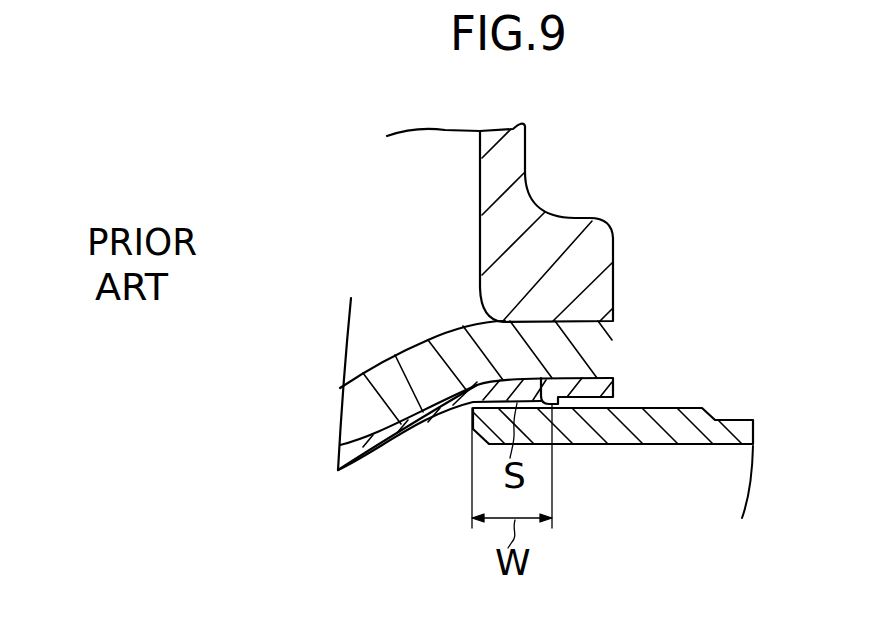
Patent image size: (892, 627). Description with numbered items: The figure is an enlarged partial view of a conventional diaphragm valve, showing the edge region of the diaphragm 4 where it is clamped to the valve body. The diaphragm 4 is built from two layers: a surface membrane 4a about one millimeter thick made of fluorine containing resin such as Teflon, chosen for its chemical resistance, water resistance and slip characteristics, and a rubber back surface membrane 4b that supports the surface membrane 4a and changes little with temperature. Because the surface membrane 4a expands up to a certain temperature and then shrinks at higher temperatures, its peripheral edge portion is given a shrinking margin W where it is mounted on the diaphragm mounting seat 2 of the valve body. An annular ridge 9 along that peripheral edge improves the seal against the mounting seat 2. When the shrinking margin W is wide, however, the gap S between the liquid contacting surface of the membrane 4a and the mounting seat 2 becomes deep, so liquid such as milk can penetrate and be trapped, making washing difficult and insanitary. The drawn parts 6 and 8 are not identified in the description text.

The diaphragm mounting seat 2 is at (627, 407).
The diaphragm 4 is at (380, 363).
The surface membrane 4a is at (422, 423).
The back surface membrane 4b is at (452, 346).
The housing 6 is at (583, 268).
The retainer 8 is at (500, 173).
The annular ridge 9 is at (552, 392).